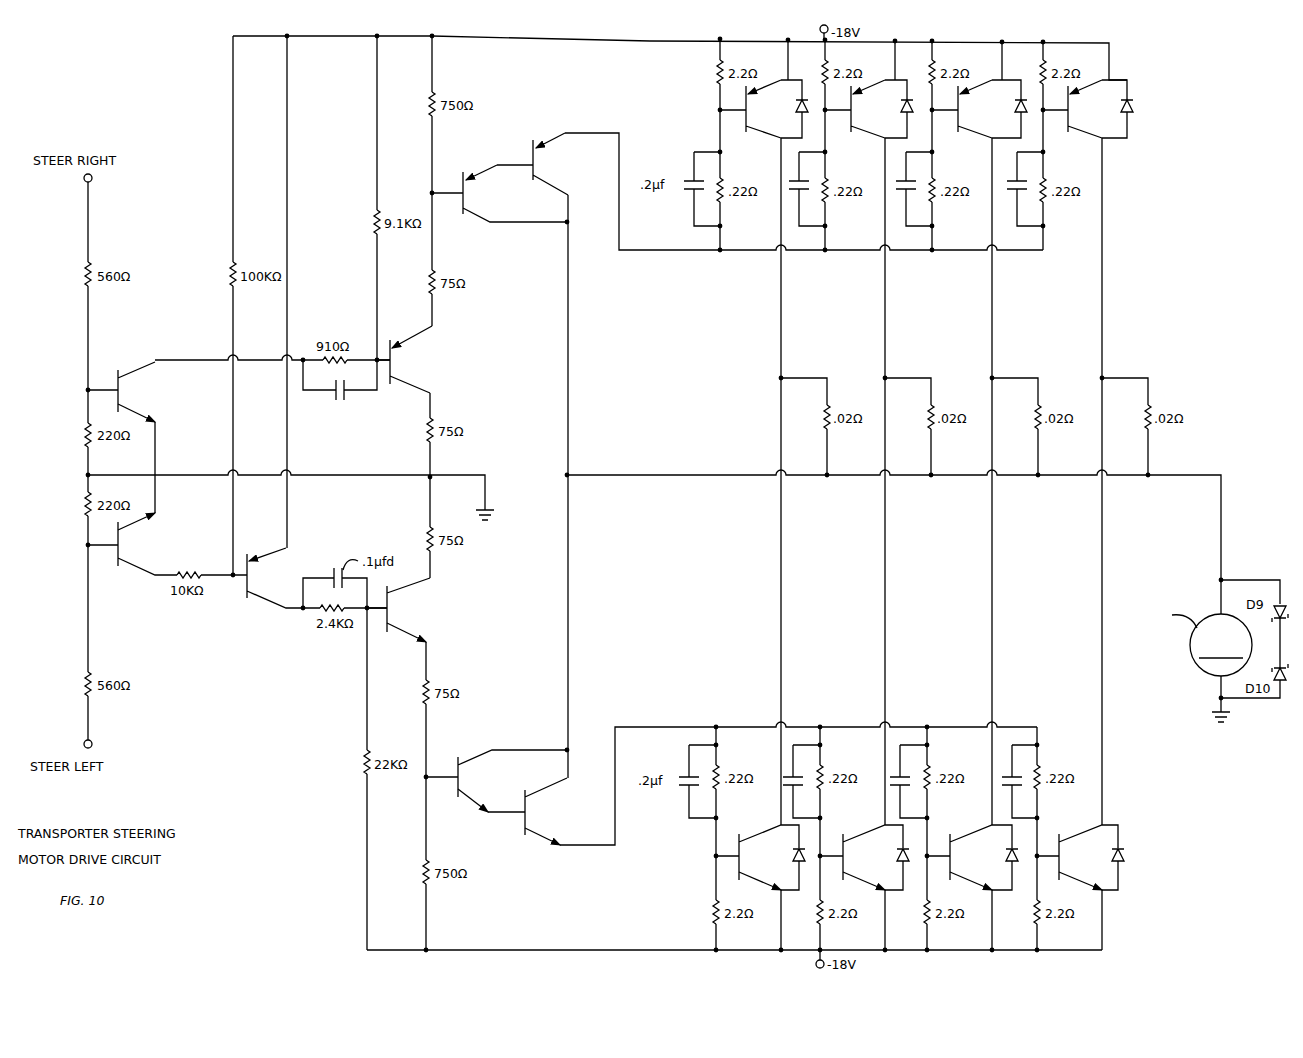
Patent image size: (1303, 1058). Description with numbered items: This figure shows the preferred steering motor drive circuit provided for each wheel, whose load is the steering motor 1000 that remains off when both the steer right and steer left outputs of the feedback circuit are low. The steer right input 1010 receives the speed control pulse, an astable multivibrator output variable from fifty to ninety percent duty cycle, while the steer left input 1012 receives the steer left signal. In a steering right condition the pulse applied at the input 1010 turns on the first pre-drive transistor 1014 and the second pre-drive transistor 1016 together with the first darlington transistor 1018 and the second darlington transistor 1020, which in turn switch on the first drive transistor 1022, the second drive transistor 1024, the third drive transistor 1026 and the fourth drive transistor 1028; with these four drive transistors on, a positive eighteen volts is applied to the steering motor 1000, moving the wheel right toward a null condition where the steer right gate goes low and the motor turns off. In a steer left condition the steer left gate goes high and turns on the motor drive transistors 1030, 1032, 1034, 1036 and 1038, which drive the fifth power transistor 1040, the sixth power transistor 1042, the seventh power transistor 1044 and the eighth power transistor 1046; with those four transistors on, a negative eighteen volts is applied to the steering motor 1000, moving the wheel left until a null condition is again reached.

The steering motor 1000 is at (1183, 633).
The steer right input of motor drive circuit 1010 is at (92, 181).
The steer left input terminal 1012 is at (92, 742).
The pre-drive transistor Q12 1014 is at (172, 408).
The pre-drive transistor Q13 1016 is at (440, 362).
The darlington transistor Q9 1018 is at (545, 240).
The darlington transistor Q10 1020 is at (593, 178).
The drive transistor Q1 1022 is at (771, 128).
The drive transistor Q2 1024 is at (876, 128).
The drive transistor Q3 1026 is at (984, 128).
The drive transistor Q4 1028 is at (1108, 141).
The motor drive transistor Q17 1030 is at (160, 518).
The motor drive transistor Q15 1032 is at (285, 546).
The motor drive transistor Q14 1034 is at (428, 592).
The motor drive transistor Q11 1036 is at (466, 760).
The motor drive transistor Q12 1038 is at (537, 826).
The motor drive transistor Q5 1040 is at (770, 830).
The motor drive transistor Q6 1042 is at (874, 830).
The motor drive transistor Q7 1044 is at (980, 830).
The motor drive transistor Q8 1046 is at (1112, 838).